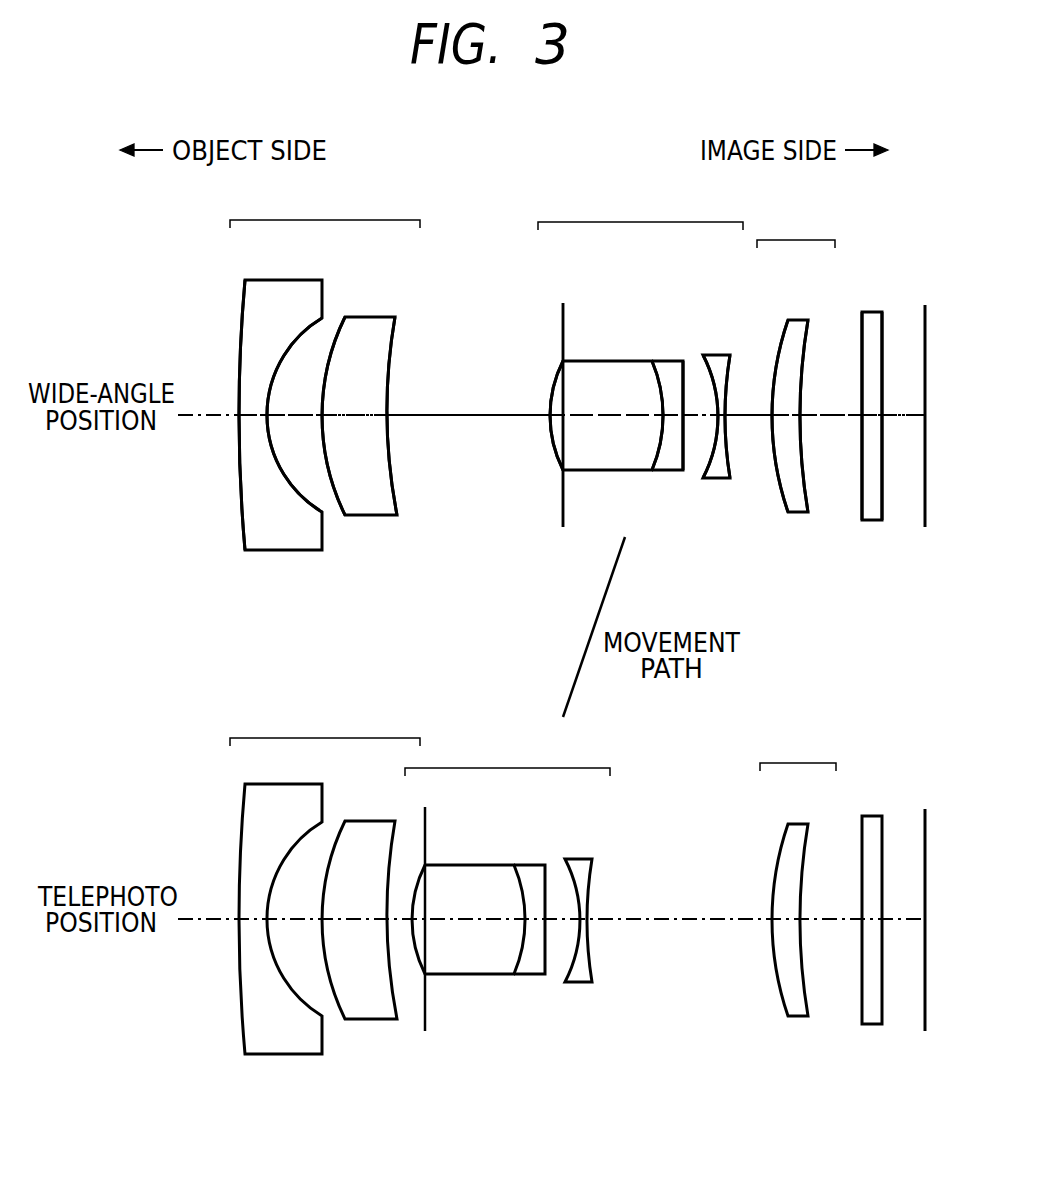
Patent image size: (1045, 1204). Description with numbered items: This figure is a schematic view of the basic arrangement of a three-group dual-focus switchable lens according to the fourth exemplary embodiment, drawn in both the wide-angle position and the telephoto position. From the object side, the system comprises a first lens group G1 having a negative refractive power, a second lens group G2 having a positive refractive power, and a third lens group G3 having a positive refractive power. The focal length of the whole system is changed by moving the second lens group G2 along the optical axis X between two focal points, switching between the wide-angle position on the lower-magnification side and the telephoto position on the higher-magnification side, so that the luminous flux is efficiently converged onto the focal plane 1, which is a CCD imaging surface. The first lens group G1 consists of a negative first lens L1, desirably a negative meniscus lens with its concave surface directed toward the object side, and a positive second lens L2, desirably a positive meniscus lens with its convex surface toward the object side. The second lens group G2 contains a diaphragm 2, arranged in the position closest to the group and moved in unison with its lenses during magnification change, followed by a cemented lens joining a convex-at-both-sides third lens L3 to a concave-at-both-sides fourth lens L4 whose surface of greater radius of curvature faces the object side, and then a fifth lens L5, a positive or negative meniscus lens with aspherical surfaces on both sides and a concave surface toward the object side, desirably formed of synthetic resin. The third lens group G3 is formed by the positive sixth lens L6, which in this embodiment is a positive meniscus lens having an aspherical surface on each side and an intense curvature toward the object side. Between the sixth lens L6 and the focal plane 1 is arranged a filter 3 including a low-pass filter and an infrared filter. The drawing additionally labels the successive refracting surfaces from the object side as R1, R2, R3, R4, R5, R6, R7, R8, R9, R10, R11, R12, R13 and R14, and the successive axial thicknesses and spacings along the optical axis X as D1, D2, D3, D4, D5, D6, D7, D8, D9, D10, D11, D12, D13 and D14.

The focal plane 1 is at (925, 528).
The diaphragm 2 is at (562, 492).
The filter 3 is at (862, 508).
The first lens group G1 is at (325, 465).
The second lens group G2 is at (574, 480).
The third lens group G3 is at (796, 487).
The first lens L1 is at (278, 552).
The second lens L2 is at (367, 517).
The third lens L3 is at (598, 471).
The fourth lens L4 is at (662, 473).
The fifth lens L5 is at (718, 480).
The sixth lens L6 is at (800, 515).
The lens surface R1 is at (241, 400).
The lens surface R2 is at (269, 410).
The lens surface R3 is at (327, 368).
The lens surface R4 is at (392, 367).
The aperture stop surface R5 is at (562, 360).
The lens surface R6 is at (552, 388).
The lens surface R7 is at (657, 392).
The lens surface R8 is at (683, 390).
The lens surface R9 is at (703, 390).
The lens surface R10 is at (724, 395).
The lens surface R11 is at (775, 380).
The lens surface R12 is at (804, 395).
The filter surface R13 is at (862, 360).
The filter surface R14 is at (886, 347).
The optical axis X is at (208, 420).
The axial distance D1 is at (260, 420).
The axial distance D2 is at (310, 420).
The axial distance D3 is at (365, 420).
The axial distance D4 is at (460, 420).
The axial distance D5 is at (548, 422).
The axial distance D6 is at (586, 420).
The axial distance D7 is at (657, 427).
The axial distance D8 is at (693, 388).
The axial distance D9 is at (720, 423).
The axial distance D10 is at (736, 430).
The axial distance D11 is at (806, 419).
The axial distance D12 is at (843, 417).
The axial distance D13 is at (872, 413).
The axial distance D14 is at (898, 418).